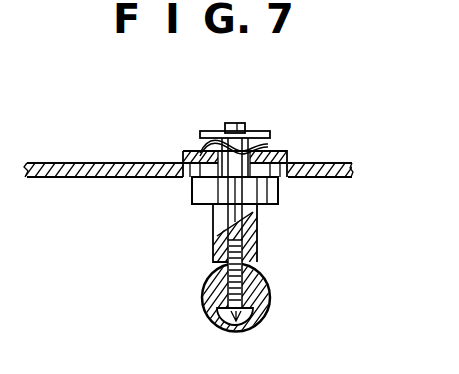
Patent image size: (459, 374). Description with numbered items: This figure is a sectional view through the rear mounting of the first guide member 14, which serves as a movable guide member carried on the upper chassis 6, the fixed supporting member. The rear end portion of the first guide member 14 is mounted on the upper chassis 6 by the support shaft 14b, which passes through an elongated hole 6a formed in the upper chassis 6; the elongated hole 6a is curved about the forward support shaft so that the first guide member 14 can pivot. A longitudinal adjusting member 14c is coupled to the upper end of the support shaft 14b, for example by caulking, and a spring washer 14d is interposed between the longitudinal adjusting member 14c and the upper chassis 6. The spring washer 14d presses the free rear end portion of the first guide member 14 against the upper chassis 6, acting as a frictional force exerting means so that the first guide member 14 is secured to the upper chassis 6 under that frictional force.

The upper chassis 6 is at (78, 178).
The elongated hole 6a is at (292, 157).
The first guide member 14 is at (270, 285).
The support shaft 14b is at (262, 192).
The longitudinal adjusting member 14c is at (211, 130).
The spring washer 14d is at (203, 152).